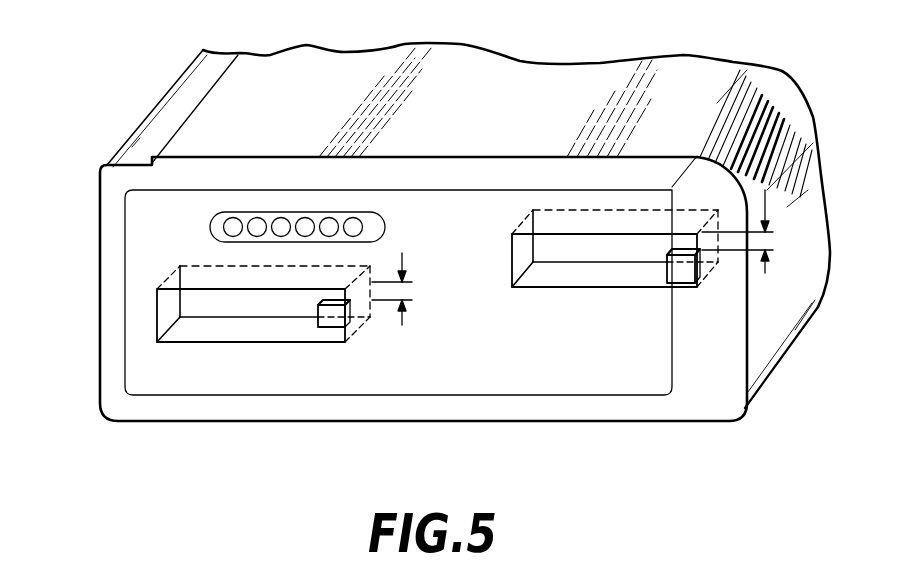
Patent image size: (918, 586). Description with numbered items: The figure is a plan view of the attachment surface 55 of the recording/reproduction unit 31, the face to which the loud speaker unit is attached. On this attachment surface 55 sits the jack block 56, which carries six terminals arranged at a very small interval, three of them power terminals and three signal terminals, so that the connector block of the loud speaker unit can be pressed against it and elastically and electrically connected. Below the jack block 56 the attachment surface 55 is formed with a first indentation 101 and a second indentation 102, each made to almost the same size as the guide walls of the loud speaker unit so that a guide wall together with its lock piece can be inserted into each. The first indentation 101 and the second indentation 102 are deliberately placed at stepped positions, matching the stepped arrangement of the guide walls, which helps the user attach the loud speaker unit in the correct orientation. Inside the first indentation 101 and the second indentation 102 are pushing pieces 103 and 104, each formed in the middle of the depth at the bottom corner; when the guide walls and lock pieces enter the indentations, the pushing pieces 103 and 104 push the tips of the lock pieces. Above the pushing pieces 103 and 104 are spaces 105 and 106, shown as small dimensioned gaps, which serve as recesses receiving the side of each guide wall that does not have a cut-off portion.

The recording/reproduction unit 31 is at (128, 108).
The attachment surface 55 is at (193, 210).
The jack block 56 is at (385, 223).
The first indentation 101 is at (229, 331).
The second indentation 102 is at (540, 276).
The pushing piece 103 is at (331, 322).
The pushing piece 104 is at (678, 267).
The space 105 is at (417, 289).
The space 106 is at (761, 231).